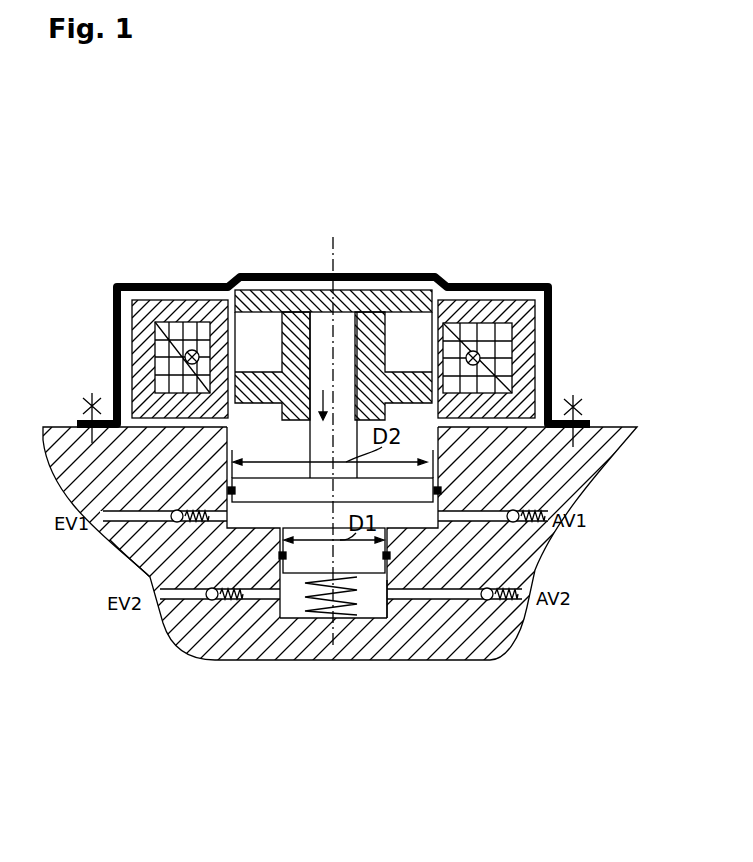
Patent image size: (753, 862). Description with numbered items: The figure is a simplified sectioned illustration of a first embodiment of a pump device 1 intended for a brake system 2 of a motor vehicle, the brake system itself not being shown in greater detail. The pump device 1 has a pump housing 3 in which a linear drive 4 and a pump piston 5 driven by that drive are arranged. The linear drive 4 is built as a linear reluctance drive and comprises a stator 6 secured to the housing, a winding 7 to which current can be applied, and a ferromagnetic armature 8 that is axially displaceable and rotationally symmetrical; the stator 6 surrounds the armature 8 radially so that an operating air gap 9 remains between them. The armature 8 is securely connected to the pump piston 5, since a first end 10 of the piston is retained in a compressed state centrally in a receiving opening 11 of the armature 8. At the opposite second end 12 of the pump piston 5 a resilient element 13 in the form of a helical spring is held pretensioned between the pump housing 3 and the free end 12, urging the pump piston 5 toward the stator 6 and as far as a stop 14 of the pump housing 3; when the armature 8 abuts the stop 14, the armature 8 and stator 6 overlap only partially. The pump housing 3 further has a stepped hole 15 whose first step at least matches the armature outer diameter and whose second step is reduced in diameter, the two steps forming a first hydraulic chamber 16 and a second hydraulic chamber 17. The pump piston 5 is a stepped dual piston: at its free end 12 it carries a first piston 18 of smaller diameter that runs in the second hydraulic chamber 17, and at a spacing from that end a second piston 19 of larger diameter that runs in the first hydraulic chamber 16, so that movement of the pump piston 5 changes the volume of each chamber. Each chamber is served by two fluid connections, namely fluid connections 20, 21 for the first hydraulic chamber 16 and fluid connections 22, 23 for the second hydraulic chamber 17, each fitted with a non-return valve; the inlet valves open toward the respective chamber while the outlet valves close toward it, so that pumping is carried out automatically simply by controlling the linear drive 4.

The pump device 1 is at (82, 180).
The brake system 2 is at (610, 180).
The pump housing 3 is at (552, 378).
The linear drive 4 is at (532, 279).
The pump piston 5 is at (232, 477).
The stator 6 is at (530, 356).
The winding 7 is at (525, 332).
The armature 8 is at (233, 290).
The operating air gap 9 is at (440, 283).
The first end 10 is at (345, 291).
The receiving opening 11 is at (320, 312).
The second end 12 is at (361, 560).
The resilient element 13 is at (302, 598).
The stop 14 is at (265, 291).
The stepped hole 15 is at (515, 438).
The first hydraulic chamber 16 is at (243, 433).
The second hydraulic chamber 17 is at (285, 604).
The first piston 18 is at (140, 550).
The second piston 19 is at (420, 480).
The fluid connection 20 is at (205, 490).
The fluid connection 21 is at (483, 522).
The fluid connection 22 is at (260, 578).
The fluid connection 23 is at (377, 597).